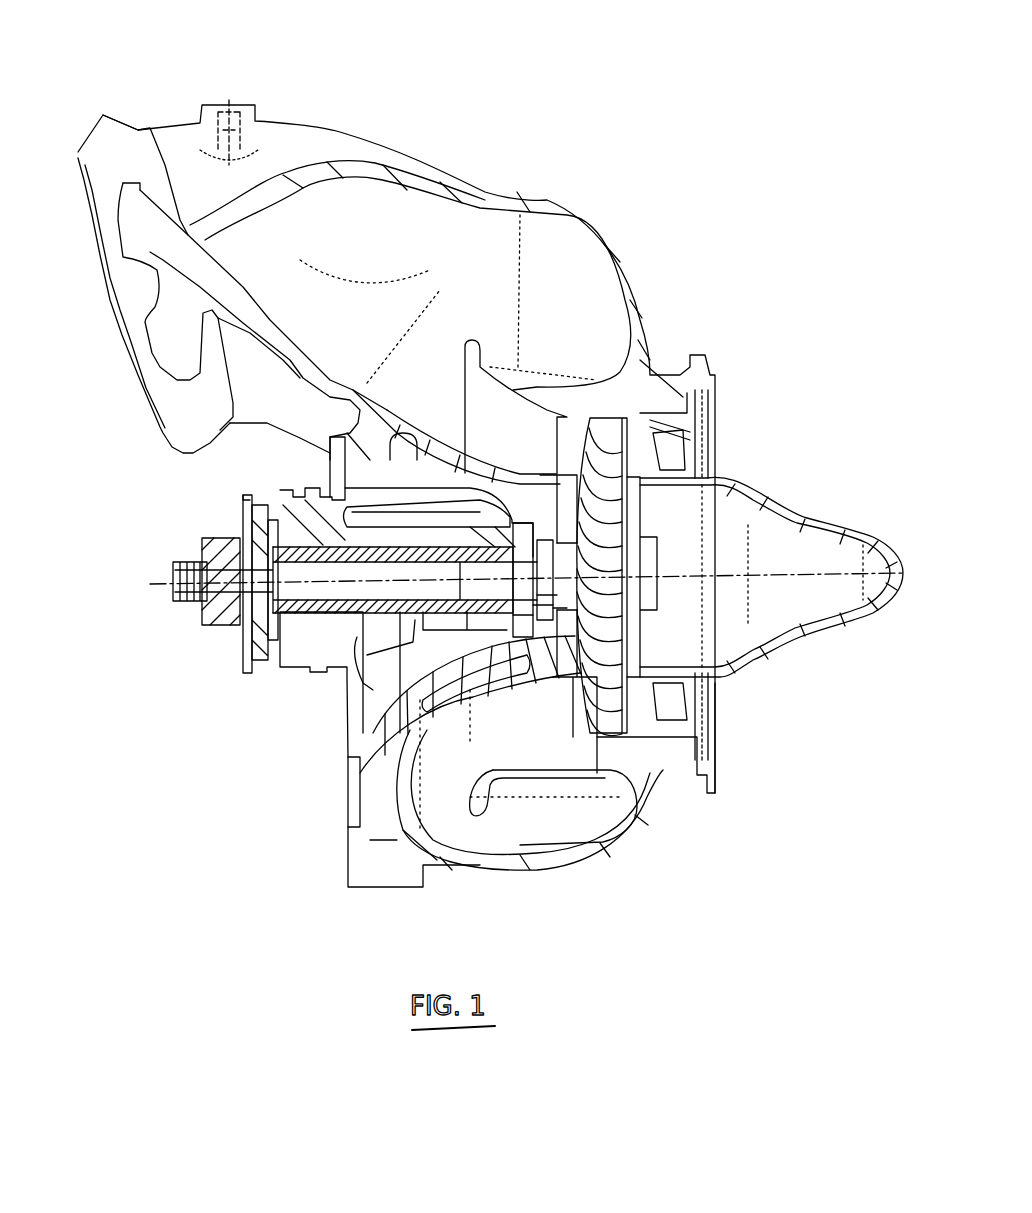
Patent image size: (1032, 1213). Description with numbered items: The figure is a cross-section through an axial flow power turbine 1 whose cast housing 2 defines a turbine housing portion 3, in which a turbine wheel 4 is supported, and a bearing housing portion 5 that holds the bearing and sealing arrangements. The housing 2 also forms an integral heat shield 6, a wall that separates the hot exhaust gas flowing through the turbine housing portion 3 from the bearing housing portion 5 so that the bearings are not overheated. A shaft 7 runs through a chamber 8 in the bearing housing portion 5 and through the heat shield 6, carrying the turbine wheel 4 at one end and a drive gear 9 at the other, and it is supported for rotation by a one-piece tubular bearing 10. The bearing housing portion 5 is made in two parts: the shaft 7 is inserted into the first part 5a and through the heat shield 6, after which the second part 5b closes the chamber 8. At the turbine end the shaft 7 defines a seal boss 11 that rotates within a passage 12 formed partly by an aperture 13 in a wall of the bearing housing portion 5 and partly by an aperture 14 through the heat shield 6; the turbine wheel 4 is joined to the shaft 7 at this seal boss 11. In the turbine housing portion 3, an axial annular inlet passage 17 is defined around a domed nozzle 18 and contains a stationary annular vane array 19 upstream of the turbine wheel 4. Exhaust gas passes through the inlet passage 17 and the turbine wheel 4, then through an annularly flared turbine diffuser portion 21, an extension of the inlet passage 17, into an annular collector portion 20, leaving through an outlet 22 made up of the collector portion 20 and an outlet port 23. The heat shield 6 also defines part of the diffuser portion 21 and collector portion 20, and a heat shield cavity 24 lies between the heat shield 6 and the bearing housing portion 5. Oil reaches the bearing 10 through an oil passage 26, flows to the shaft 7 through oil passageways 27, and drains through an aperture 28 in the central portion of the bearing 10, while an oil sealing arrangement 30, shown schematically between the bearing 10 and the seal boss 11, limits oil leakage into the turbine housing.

The axial flow power turbine 1 is at (716, 230).
The cast housing 2 is at (540, 200).
The turbine housing portion 3 is at (663, 383).
The turbine wheel 4 is at (607, 730).
The bearing housing portion 5 is at (368, 479).
The first part of the bearing housing portion 5a is at (383, 733).
The second part of the bearing housing portion 5b is at (348, 725).
The heat shield 6 is at (563, 672).
The shaft 7 is at (297, 593).
The chamber 8 is at (343, 613).
The drive gear 9 is at (207, 625).
The one-piece tubular bearing 10 is at (280, 540).
The seal boss 11 is at (547, 600).
The passage 12 is at (573, 540).
The aperture 13 is at (537, 610).
The aperture 14 is at (560, 613).
The axial annular inlet passage 17 is at (680, 443).
The domed nozzle 18 is at (743, 663).
The stationary annular vane array 19 is at (695, 428).
The annular collector portion 20 is at (405, 223).
The turbine diffuser portion 21 is at (543, 427).
The outlet 22 is at (292, 130).
The outlet port 23 is at (137, 287).
The heat shield cavity 24 is at (407, 455).
The oil passage 26 is at (243, 492).
The oil passageways 27 is at (255, 523).
The aperture 28 is at (405, 605).
The oil sealing arrangement 30 is at (520, 620).